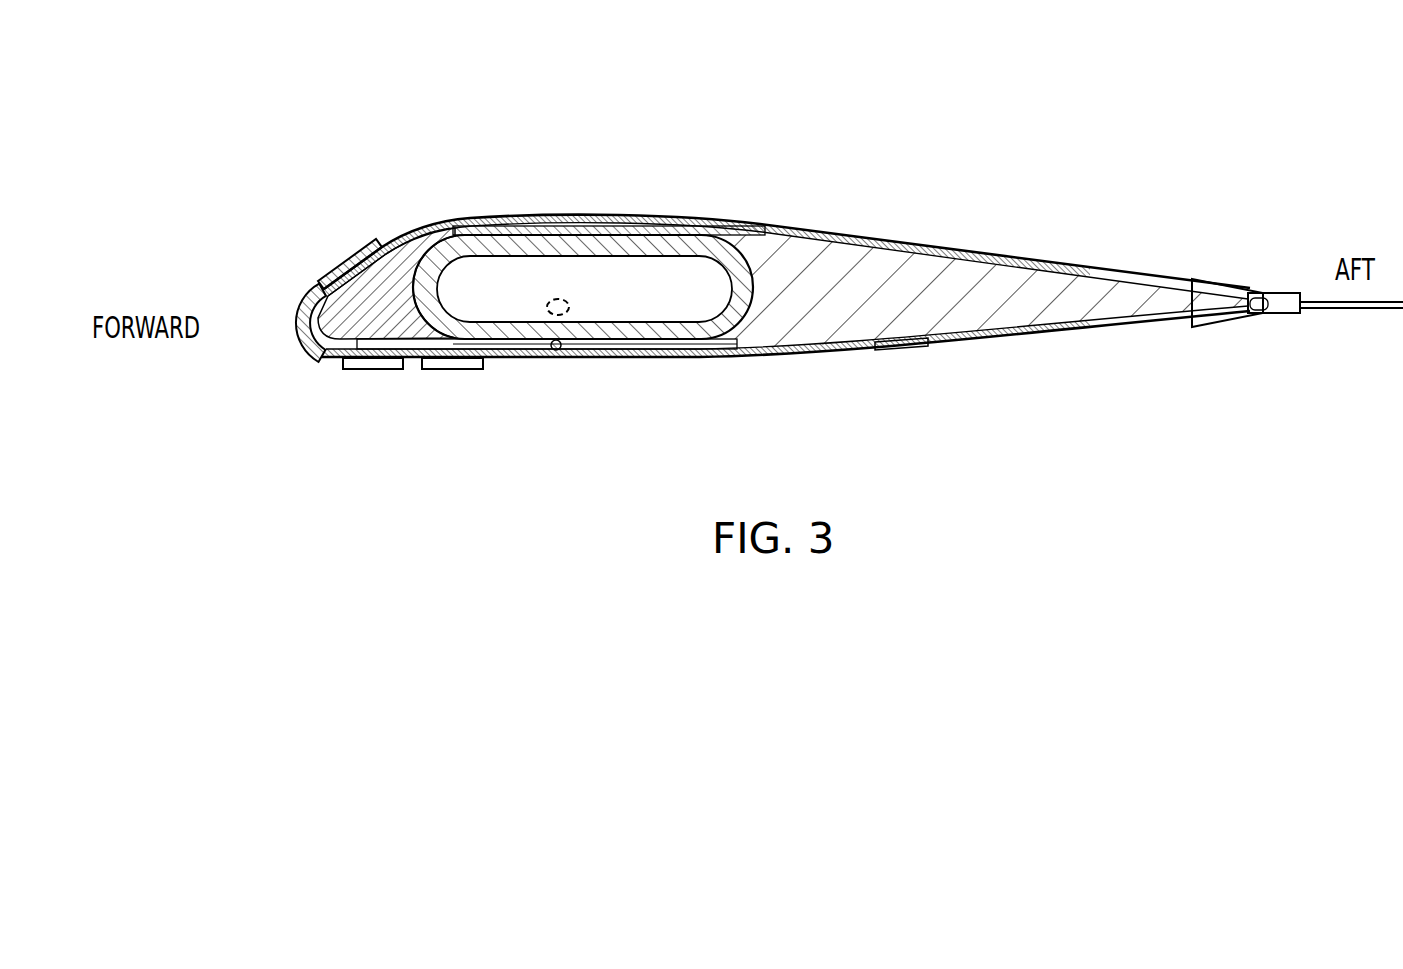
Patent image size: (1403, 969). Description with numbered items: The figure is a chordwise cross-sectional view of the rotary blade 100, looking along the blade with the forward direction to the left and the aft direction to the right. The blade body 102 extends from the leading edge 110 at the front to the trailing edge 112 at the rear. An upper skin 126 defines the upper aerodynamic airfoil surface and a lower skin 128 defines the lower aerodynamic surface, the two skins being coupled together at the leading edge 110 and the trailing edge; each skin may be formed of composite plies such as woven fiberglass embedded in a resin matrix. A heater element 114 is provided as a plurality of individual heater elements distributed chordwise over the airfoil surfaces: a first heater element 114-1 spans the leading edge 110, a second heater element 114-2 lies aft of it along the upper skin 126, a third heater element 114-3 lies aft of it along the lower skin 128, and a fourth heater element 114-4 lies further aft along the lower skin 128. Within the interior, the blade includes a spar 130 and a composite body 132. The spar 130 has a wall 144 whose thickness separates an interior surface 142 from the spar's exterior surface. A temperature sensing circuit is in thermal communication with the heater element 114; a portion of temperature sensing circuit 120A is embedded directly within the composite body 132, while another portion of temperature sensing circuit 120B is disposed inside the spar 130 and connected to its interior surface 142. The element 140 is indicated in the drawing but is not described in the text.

The rotary blade 100 is at (773, 370).
The blade body 102 is at (982, 216).
The leading edge 110 is at (318, 300).
The trailing edge 112 is at (1243, 306).
The heater element 114 is at (315, 325).
The first heater element 114-1 is at (307, 350).
The second heater element 114-2 is at (364, 250).
The third heater element 114-3 is at (372, 370).
The fourth heater element 114-4 is at (432, 370).
The portion of temperature sensing circuit 120A is at (557, 353).
The portion of temperature sensing circuit 120B is at (571, 313).
The upper skin 126 is at (771, 230).
The lower skin 128 is at (763, 358).
The spar 130 is at (583, 216).
The composite body 132 is at (561, 267).
The lower support strip 140 is at (722, 333).
The interior surface 142 is at (658, 322).
The wall 144 is at (691, 346).